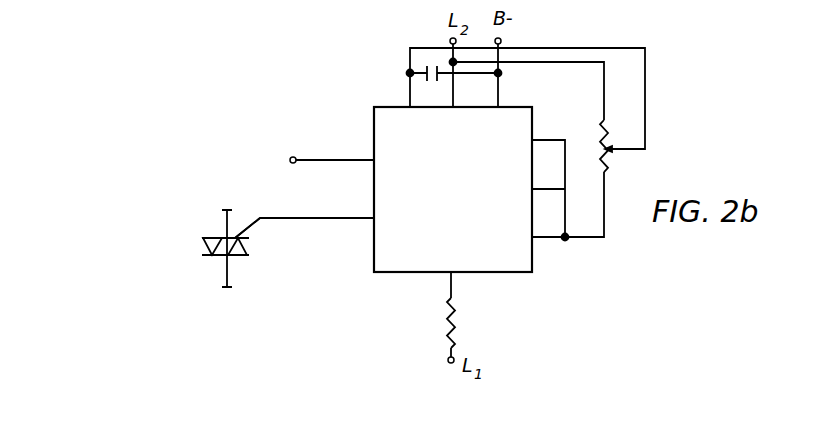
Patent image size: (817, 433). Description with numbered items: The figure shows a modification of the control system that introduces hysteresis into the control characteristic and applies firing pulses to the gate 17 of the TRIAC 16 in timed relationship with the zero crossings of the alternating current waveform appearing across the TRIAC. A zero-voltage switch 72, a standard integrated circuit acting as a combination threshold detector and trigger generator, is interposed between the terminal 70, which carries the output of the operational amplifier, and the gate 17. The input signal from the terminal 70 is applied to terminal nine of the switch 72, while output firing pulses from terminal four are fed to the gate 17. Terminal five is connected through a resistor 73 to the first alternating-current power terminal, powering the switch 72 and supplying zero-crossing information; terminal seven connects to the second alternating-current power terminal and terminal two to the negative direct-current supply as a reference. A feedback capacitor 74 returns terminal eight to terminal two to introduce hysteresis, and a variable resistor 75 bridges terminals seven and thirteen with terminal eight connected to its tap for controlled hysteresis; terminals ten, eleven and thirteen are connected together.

The TRIAC 16 is at (212, 252).
The gate 17 is at (251, 221).
The terminal 70 is at (297, 134).
The zero-voltage switch 72 is at (531, 117).
The resistor 73 is at (459, 318).
The feedback capacitor 74 is at (421, 66).
The variable resistor 75 is at (611, 156).